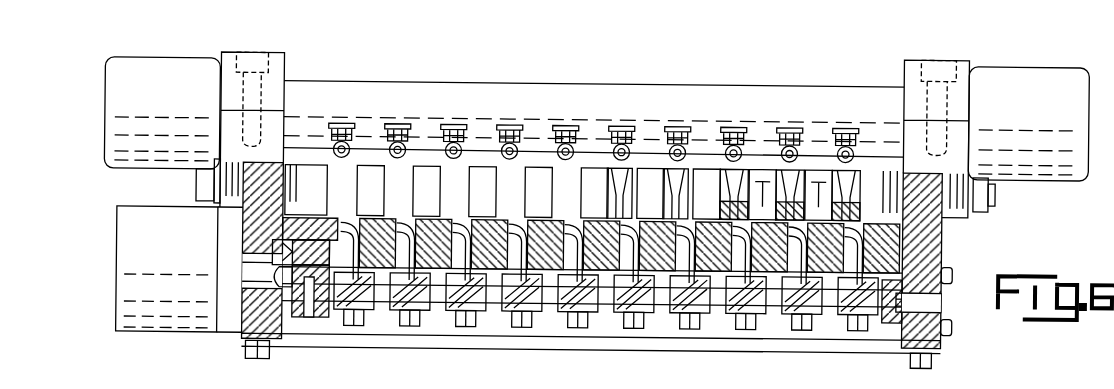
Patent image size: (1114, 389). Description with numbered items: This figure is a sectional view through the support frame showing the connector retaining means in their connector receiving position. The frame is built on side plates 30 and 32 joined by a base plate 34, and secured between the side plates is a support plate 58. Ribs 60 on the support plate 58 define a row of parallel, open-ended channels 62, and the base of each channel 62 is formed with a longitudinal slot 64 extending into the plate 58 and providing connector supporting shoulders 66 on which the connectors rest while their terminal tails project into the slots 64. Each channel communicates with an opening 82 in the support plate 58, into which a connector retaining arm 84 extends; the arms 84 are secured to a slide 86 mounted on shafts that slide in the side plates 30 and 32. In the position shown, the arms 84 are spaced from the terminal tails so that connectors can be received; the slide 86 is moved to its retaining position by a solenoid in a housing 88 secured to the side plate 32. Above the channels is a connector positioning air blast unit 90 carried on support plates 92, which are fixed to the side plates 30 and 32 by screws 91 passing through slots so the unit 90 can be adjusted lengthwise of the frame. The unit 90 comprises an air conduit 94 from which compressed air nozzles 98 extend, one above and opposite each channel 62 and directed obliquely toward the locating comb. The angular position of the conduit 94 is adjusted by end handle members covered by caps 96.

The side plate 30 is at (940, 238).
The side plate 32 is at (258, 228).
The base plate 34 is at (743, 349).
The support plate 58 is at (953, 270).
The ribs 60 is at (593, 178).
The channels 62 is at (532, 218).
The longitudinal slot 64 is at (390, 218).
The connector supporting shoulders 66 is at (352, 218).
The opening 82 is at (855, 290).
The connector retaining arm 84 is at (663, 261).
The slide 86 is at (890, 320).
The housing 88 is at (183, 320).
The connector positioning air blast unit 90 is at (740, 83).
The screws 91 is at (196, 191).
The support plates 92 is at (274, 64).
The air conduit 94 is at (692, 91).
The caps 96 is at (192, 103).
The compressed air nozzles 98 is at (395, 128).